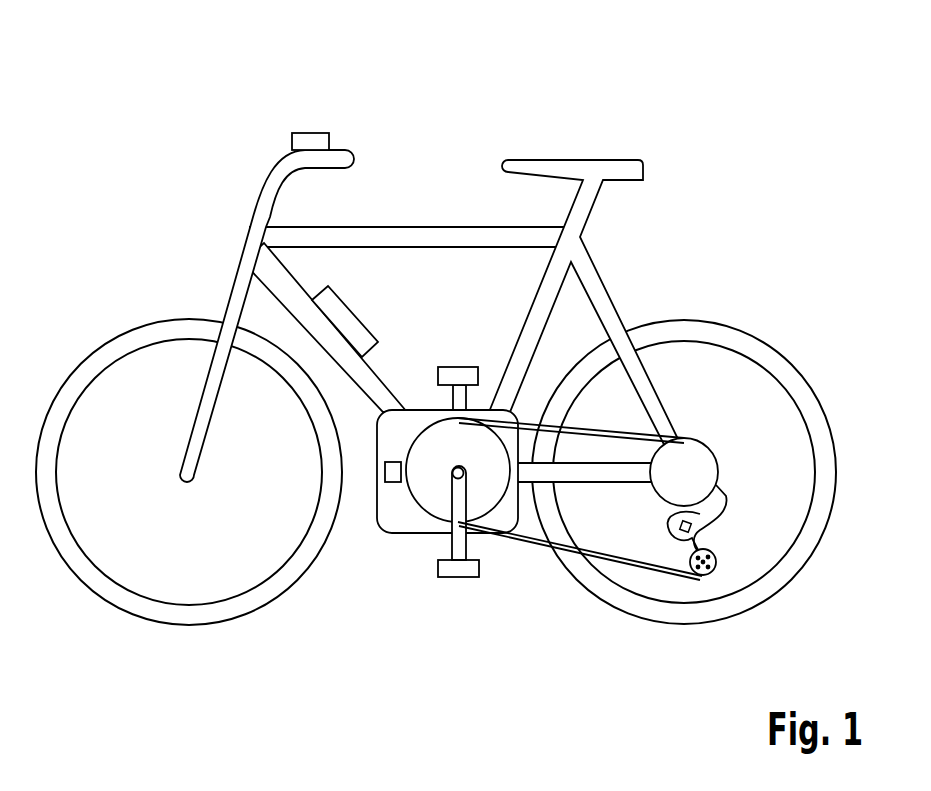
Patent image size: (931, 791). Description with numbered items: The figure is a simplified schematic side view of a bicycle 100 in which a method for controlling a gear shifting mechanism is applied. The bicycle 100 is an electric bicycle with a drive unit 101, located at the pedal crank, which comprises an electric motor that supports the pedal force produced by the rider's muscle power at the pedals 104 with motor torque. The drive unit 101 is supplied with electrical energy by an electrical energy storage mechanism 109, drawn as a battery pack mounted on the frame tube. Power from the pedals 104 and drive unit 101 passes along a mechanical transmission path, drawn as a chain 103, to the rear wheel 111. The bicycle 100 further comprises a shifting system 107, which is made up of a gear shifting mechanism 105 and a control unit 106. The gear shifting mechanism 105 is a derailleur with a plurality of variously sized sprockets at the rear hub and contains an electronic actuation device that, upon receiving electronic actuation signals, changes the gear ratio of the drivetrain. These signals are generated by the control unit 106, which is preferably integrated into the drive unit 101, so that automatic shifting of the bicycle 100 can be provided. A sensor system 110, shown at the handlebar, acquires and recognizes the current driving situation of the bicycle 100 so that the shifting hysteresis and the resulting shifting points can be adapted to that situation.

The bicycle 100 is at (585, 92).
The drive unit 101 is at (407, 523).
The chain 103 is at (505, 560).
The pedals 104 is at (461, 367).
The gear shifting mechanism 105 is at (732, 535).
The control unit 106 is at (392, 483).
The shifting system 107 is at (745, 398).
The electrical energy storage mechanism 109 is at (345, 320).
The sensor system 110 is at (310, 140).
The rear wheel 111 is at (727, 333).